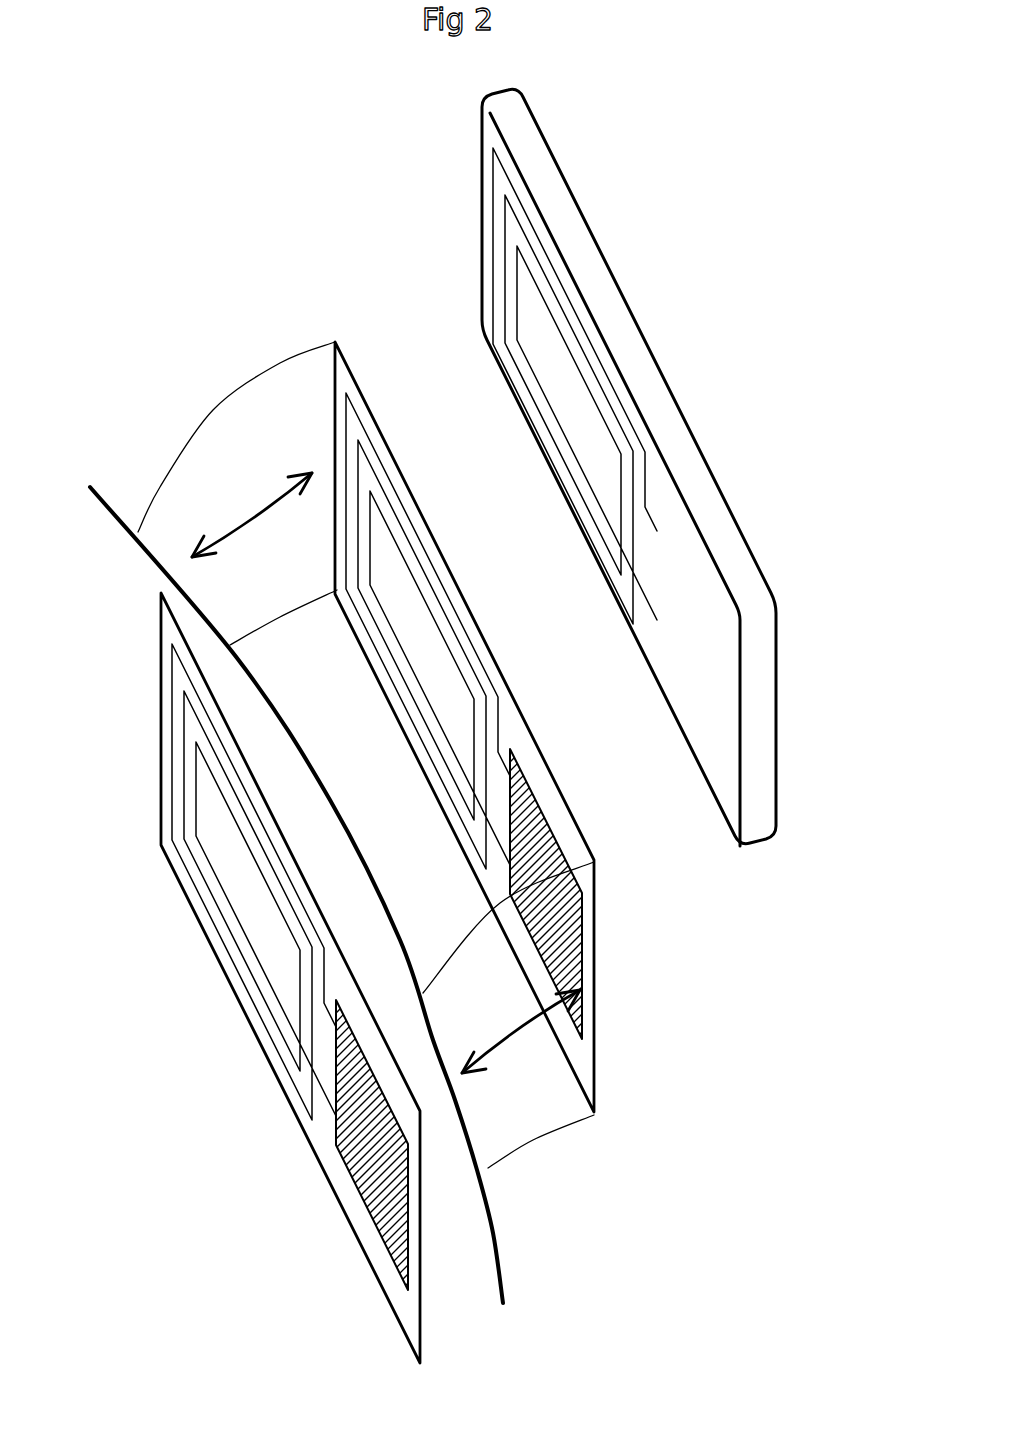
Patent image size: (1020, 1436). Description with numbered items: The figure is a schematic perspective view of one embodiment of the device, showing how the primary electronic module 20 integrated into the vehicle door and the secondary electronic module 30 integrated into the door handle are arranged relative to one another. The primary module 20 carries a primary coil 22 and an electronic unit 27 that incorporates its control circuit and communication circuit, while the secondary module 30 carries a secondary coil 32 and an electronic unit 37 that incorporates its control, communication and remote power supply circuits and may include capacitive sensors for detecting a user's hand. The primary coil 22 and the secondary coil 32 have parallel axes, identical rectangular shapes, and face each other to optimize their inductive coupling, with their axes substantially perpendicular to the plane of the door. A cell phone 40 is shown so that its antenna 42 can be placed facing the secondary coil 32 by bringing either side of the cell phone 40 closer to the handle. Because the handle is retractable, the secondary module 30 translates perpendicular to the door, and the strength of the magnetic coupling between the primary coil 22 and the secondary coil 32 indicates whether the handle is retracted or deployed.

The primary electronic module 20 is at (175, 878).
The primary coil 22 is at (252, 975).
The electronic unit 27 is at (360, 1173).
The secondary electronic module 30 is at (372, 408).
The secondary coil 32 is at (415, 555).
The electronic unit 37 is at (560, 908).
The cell phone 40 is at (748, 548).
The antenna 42 is at (570, 303).